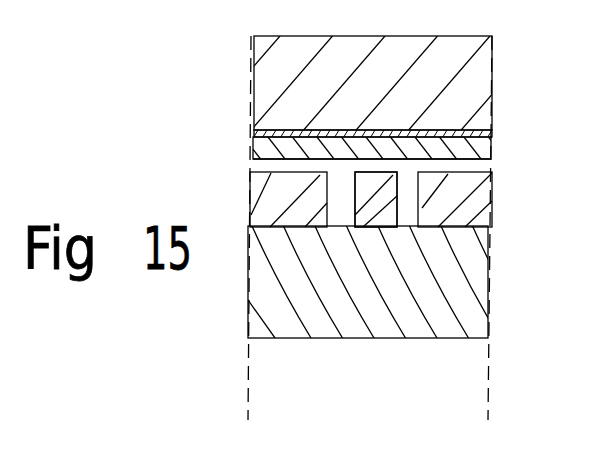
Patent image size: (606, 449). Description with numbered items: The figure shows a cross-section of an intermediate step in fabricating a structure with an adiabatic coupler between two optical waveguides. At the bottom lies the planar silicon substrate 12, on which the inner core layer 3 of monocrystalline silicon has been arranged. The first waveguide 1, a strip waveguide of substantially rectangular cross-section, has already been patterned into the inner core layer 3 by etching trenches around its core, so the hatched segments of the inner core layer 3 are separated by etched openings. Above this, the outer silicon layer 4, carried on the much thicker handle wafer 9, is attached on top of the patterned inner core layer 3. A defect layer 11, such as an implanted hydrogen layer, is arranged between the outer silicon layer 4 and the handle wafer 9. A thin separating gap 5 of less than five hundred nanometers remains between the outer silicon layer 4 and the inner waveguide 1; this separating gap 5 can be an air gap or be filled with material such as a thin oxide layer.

The handle wafer 9 is at (480, 81).
The defect layer 11 is at (253, 132).
The outer silicon layer 4 is at (492, 146).
The separating gap 5 is at (490, 167).
The inner core layer 3 is at (485, 207).
The first waveguide 1 is at (377, 203).
The silicon substrate 12 is at (466, 288).